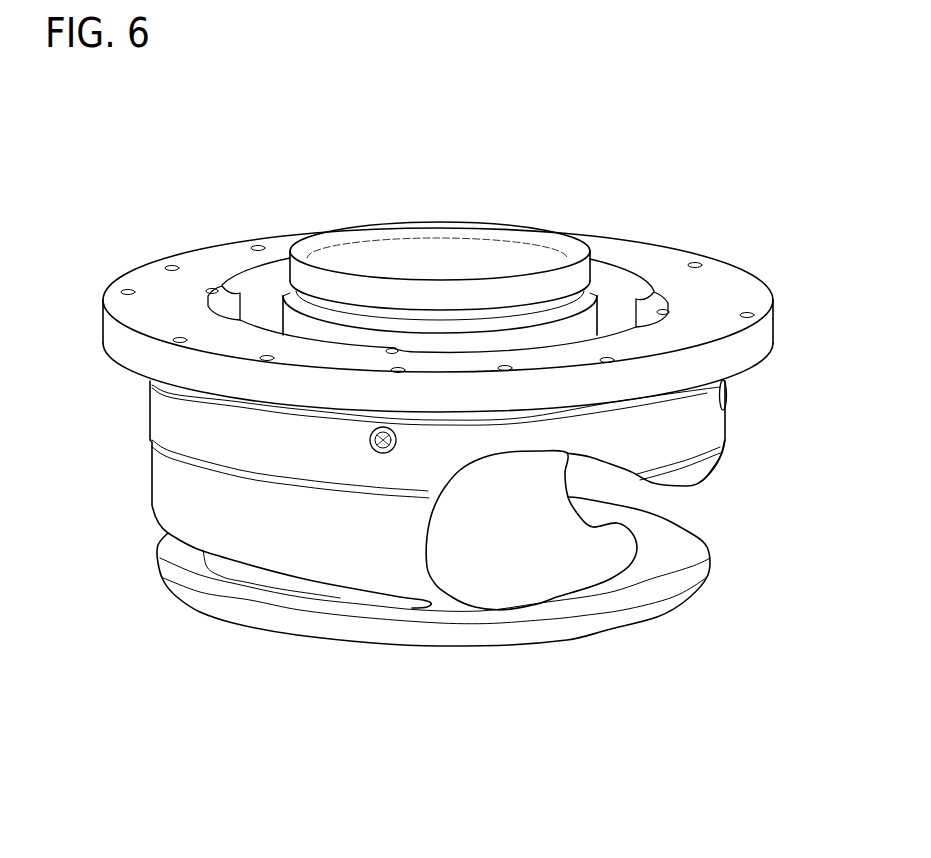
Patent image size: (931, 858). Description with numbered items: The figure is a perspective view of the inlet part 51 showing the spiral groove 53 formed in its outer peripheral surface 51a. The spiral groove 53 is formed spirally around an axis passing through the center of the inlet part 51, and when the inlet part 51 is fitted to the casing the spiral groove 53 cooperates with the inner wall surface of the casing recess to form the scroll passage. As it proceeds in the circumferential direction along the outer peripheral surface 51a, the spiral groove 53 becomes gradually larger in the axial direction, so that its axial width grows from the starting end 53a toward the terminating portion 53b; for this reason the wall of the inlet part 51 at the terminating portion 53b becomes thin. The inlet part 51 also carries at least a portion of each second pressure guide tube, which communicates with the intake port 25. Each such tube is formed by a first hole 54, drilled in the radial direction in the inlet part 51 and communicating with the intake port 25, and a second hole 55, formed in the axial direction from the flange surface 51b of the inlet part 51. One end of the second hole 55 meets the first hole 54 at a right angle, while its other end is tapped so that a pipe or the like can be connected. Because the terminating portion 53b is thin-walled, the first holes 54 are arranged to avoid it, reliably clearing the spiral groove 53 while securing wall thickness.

The intake port 25 is at (447, 263).
The inlet part 51 is at (441, 361).
The outer peripheral surface 51a is at (731, 416).
The flange surface 51b is at (730, 283).
The spiral groove 53 is at (451, 588).
The starting end 53a is at (421, 610).
The terminating portion 53b is at (513, 540).
The first hole 54 is at (372, 437).
The second hole 55 is at (212, 291).